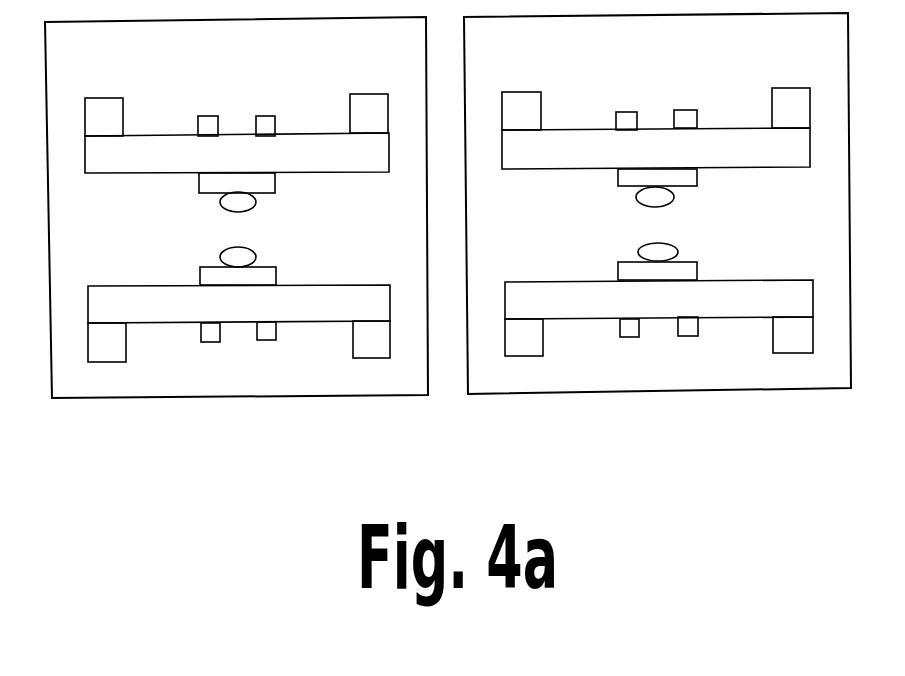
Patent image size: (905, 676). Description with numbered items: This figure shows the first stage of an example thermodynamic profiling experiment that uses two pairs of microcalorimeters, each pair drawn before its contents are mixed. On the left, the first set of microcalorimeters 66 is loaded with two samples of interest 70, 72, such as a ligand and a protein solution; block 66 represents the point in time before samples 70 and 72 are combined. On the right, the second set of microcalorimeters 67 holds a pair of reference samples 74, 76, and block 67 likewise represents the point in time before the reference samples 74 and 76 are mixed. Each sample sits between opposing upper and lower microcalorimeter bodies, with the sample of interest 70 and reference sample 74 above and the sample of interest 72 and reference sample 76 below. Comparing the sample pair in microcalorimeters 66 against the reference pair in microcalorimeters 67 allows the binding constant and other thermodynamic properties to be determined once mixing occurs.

The first set of microcalorimeters 66 is at (252, 98).
The second set of microcalorimeters 67 is at (670, 93).
The sample of interest 70 is at (253, 198).
The sample of interest 72 is at (257, 255).
The reference sample 74 is at (670, 188).
The reference sample 76 is at (676, 250).